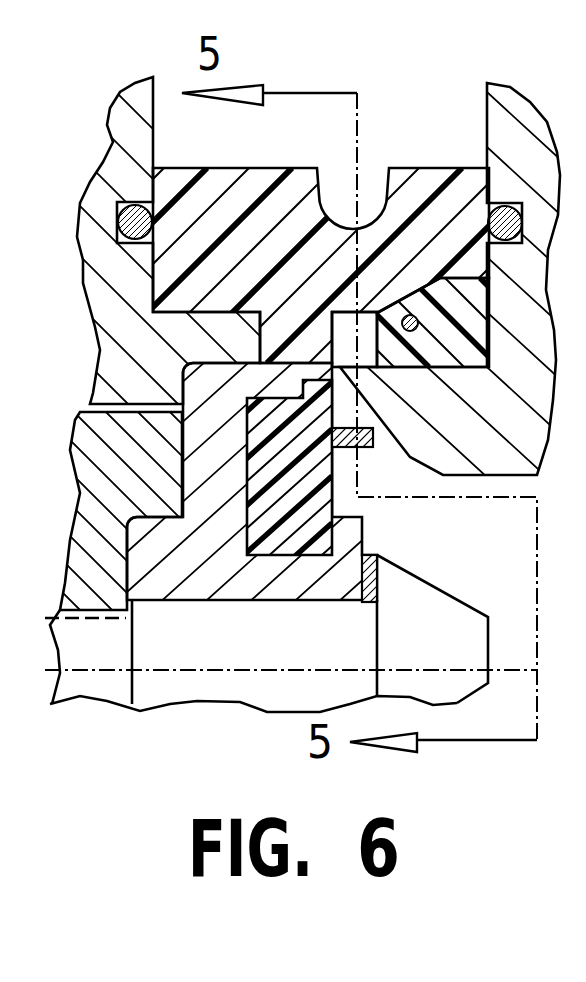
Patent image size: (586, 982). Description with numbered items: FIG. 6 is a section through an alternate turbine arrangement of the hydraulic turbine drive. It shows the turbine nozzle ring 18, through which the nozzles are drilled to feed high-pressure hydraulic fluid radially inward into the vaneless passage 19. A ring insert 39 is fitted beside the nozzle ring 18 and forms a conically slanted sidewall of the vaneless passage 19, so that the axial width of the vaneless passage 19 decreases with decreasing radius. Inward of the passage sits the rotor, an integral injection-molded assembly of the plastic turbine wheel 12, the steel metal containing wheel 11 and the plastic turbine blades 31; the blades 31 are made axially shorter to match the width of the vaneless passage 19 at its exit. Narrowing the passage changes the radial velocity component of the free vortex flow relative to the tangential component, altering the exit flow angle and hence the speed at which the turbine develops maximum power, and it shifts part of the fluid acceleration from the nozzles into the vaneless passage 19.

The metal containing wheel 11 is at (277, 540).
The plastic turbine wheel 12 is at (183, 573).
The turbine nozzle ring 18 is at (277, 213).
The vaneless passage 19 is at (450, 260).
The turbine blades 31 is at (350, 230).
The ring insert 39 is at (467, 280).